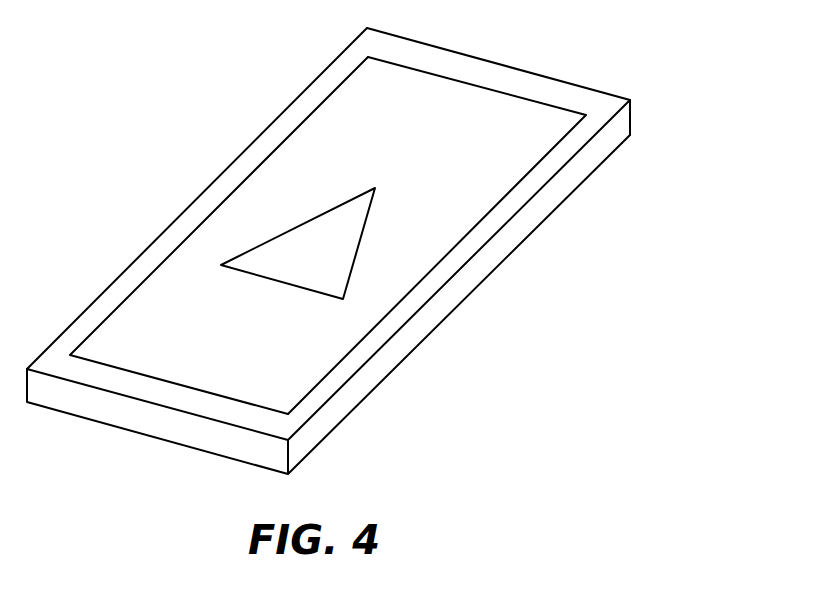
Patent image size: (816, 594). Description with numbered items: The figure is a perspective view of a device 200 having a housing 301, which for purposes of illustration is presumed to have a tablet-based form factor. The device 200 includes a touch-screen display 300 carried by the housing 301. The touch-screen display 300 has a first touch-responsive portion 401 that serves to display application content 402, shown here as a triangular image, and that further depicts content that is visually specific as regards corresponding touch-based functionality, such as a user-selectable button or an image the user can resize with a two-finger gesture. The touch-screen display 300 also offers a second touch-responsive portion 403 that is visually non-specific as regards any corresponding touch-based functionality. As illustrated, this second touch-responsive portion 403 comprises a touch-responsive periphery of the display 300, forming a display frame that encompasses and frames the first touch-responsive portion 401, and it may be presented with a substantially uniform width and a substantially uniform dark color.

The device 200 is at (416, 444).
The touch-screen display 300 is at (403, 80).
The housing 301 is at (207, 190).
The first touch-responsive portion 401 is at (490, 110).
The application content 402 is at (335, 248).
The second touch-responsive portion 403 is at (577, 142).